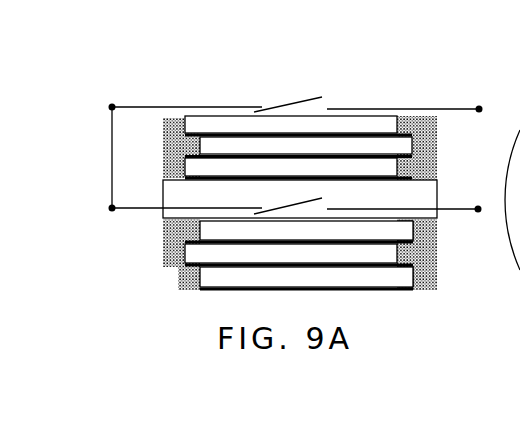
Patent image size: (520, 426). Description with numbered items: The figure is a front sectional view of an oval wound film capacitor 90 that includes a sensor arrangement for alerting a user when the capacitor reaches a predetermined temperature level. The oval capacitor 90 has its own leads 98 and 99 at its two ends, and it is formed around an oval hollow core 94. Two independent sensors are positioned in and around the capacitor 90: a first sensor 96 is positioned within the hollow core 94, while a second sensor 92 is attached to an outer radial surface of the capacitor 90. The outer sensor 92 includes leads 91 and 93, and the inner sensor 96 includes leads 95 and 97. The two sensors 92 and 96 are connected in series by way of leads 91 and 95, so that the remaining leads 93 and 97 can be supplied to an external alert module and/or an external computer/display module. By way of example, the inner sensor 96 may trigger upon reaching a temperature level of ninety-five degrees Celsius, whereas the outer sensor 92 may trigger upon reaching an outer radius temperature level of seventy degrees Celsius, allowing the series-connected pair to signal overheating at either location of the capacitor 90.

The oval capacitor 90 is at (173, 46).
The lead 91 is at (112, 107).
The sensor 92 is at (293, 92).
The lead 93 is at (478, 108).
The oval hollow core 94 is at (163, 195).
The lead 95 is at (112, 208).
The sensor 96 is at (307, 207).
The lead 97 is at (479, 208).
The lead 98 is at (163, 252).
The lead 99 is at (437, 254).